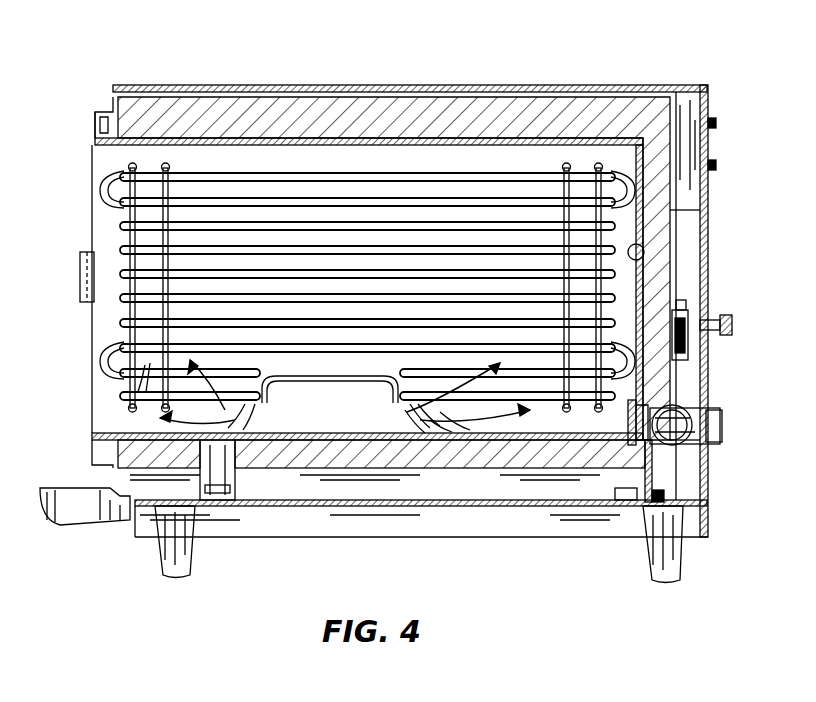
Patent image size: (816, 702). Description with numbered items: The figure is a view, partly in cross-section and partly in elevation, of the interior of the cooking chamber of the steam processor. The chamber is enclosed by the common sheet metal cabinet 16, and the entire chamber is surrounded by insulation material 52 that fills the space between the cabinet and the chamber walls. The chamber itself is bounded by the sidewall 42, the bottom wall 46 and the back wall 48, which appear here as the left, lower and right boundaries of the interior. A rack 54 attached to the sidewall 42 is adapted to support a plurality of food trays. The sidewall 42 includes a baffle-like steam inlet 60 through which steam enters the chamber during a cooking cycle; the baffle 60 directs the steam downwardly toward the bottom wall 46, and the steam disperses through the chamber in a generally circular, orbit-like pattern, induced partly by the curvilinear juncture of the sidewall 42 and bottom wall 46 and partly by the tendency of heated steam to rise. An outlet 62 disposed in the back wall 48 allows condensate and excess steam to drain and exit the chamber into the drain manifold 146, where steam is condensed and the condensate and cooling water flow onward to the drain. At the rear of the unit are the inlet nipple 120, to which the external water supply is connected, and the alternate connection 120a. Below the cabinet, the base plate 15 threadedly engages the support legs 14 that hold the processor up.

The support legs 14 is at (672, 548).
The base plate 15 is at (410, 504).
The sheet metal cabinet 16 is at (355, 85).
The sidewall 42 is at (125, 158).
The bottom wall 46 is at (530, 438).
The back wall 48 is at (647, 238).
The insulation material 52 is at (578, 108).
The racks 54 is at (277, 178).
The baffle-like steam inlet 60 is at (325, 388).
The outlet 62 is at (628, 430).
The inlet nipple 120 is at (722, 325).
The alternate connection 120a is at (690, 358).
The drain manifold 146 is at (680, 428).